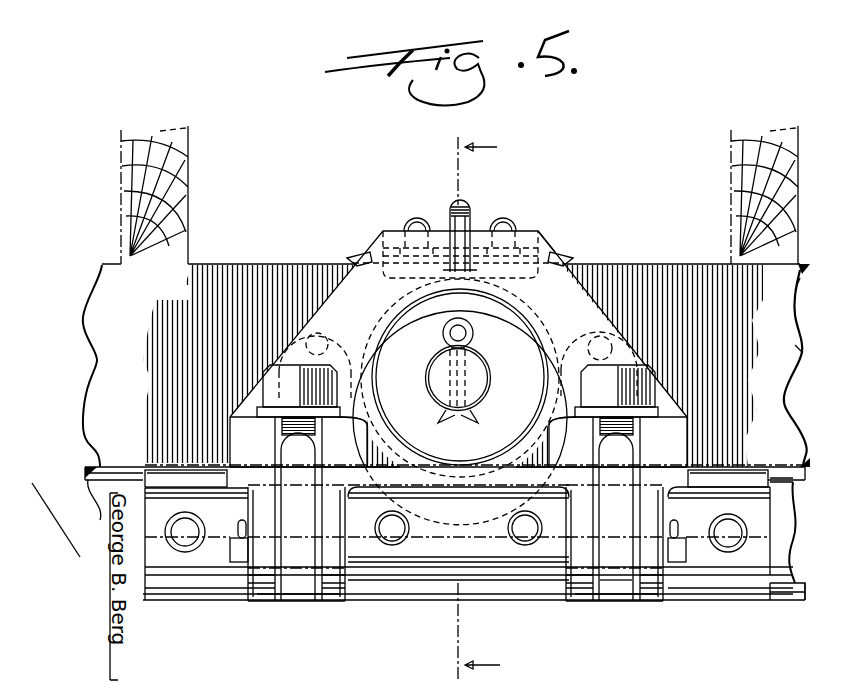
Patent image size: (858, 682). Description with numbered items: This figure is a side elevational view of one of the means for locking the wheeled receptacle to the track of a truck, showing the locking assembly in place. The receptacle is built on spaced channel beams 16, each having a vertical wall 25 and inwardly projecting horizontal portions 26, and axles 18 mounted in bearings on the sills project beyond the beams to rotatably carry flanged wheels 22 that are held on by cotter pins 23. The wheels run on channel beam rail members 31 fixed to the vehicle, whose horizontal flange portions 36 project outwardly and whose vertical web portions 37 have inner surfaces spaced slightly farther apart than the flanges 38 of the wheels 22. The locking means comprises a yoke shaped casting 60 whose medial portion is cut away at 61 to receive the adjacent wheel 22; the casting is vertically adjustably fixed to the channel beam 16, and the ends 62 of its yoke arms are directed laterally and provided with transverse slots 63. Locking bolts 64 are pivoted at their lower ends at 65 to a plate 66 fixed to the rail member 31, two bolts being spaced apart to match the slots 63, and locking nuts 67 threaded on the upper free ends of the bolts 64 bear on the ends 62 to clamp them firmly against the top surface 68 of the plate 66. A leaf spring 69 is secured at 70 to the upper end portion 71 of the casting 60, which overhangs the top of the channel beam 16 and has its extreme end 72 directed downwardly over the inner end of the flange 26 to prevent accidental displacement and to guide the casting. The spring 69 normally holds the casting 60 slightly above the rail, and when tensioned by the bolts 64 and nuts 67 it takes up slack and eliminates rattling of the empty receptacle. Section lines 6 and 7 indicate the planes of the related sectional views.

The section line 6- 6 is at (465, 408).
The section line 7- 7 is at (192, 181).
The channel beam 16 is at (120, 306).
The axle 18 is at (472, 365).
The flanged wheel 22 is at (522, 352).
The cotter pin 23 is at (443, 338).
The vertical wall 25 is at (783, 352).
The horizontal portion 26 is at (807, 277).
The rail member 31 is at (808, 590).
The flange portion 36 is at (787, 598).
The vertical web portion 37 is at (790, 558).
The wheel flange 38 is at (392, 457).
The yoke shaped casting 60 is at (350, 280).
The cut-away medial portion 61 is at (398, 331).
The yoke arm end 62 is at (240, 425).
The transverse slot 63 is at (325, 444).
The locking bolt 64 is at (288, 463).
The pivot 65 is at (622, 562).
The plate 66 is at (305, 560).
The locking nut 67 is at (547, 483).
The top surface 68 is at (678, 463).
The leaf spring 69 is at (558, 254).
The spring fastening 70 is at (412, 220).
The upper end portion 71 is at (527, 224).
The extreme end 72 is at (403, 272).